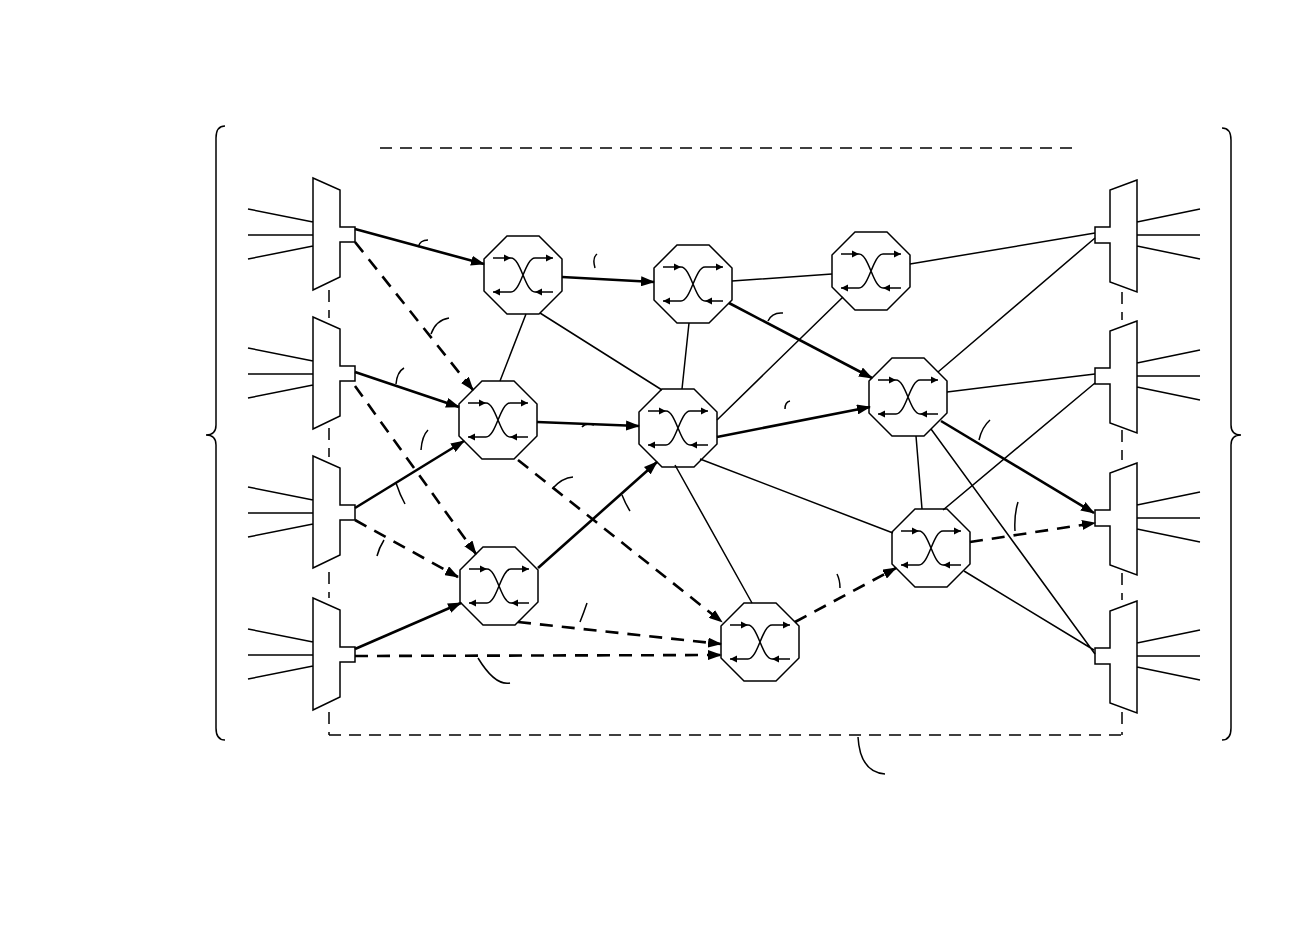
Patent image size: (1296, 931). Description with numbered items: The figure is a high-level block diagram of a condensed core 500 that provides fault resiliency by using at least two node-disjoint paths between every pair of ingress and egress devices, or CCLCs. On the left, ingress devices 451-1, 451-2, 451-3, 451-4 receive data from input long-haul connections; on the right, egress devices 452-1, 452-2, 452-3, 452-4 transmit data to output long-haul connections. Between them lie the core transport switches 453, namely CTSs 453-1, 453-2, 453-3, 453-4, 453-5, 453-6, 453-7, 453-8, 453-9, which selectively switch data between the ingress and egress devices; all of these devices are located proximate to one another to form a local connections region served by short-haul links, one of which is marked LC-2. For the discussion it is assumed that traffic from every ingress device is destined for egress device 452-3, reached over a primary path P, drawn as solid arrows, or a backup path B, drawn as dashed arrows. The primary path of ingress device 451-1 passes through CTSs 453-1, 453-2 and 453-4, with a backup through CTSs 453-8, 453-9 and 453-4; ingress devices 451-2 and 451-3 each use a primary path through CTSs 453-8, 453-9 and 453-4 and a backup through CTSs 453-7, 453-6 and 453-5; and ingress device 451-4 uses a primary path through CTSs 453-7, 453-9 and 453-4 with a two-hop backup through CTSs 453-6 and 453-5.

The condensed core 500 is at (1176, 98).
The ingress device 451-1 is at (340, 200).
The ingress device 451-2 is at (343, 344).
The ingress device 451-3 is at (343, 482).
The ingress device 451-4 is at (343, 624).
The egress device 452-1 is at (1110, 210).
The egress device 452-2 is at (1107, 349).
The egress device 452-3 is at (1107, 489).
The egress device 452-4 is at (1107, 629).
The core transport switches 453 is at (937, 617).
The core transport switch 453-1 is at (523, 236).
The core transport switch 453-2 is at (694, 245).
The core transport switch 453-3 is at (870, 232).
The core transport switch 453-4 is at (908, 358).
The core transport switch 453-5 is at (903, 524).
The core transport switch 453-6 is at (799, 642).
The core transport switch 453-7 is at (499, 547).
The core transport switch 453-8 is at (535, 392).
The core transport switch 453-9 is at (697, 468).
The local connection LC-2 is at (420, 621).